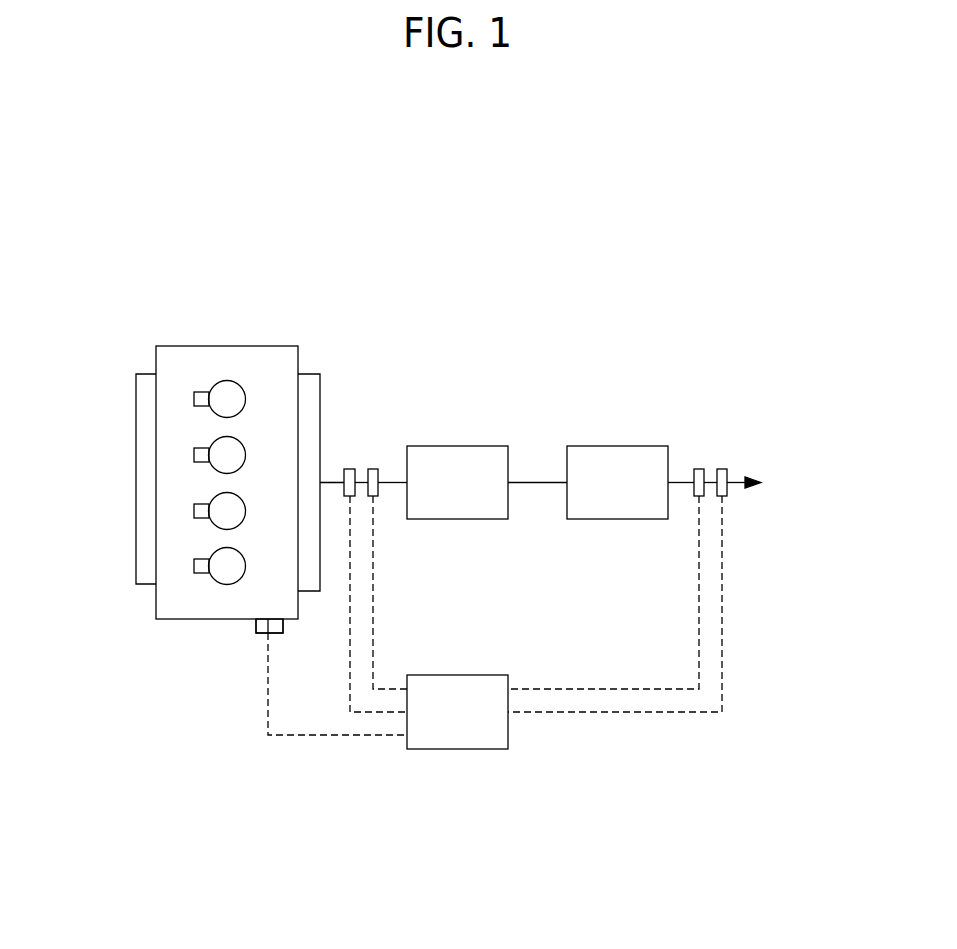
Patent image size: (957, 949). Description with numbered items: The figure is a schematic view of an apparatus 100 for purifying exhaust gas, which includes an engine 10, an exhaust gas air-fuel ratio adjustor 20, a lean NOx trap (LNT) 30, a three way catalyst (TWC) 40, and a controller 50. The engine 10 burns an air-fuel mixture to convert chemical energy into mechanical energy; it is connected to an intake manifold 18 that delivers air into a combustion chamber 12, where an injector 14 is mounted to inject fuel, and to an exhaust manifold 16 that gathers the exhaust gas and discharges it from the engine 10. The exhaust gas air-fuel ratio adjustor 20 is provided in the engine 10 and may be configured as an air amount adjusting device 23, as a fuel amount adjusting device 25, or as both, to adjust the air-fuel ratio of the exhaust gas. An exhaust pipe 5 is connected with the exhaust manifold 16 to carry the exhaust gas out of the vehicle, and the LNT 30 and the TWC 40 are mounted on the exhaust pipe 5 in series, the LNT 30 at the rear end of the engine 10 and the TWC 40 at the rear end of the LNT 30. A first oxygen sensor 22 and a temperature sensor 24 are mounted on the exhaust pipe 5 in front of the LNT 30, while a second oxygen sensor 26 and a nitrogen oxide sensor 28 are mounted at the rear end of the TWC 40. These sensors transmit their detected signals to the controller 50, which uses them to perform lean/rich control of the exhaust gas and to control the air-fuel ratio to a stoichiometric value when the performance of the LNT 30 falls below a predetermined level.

The apparatus for purifying exhaust gas 100 is at (476, 238).
The engine 10 is at (283, 302).
The combustion chamber 12 is at (222, 381).
The injector 14 is at (200, 391).
The exhaust manifold 16 is at (308, 374).
The intake manifold 18 is at (136, 431).
The exhaust gas air-fuel ratio adjustor 20 is at (262, 636).
The air amount adjusting device 23 is at (256, 630).
The fuel amount adjusting device 25 is at (283, 630).
The exhaust pipe 5 is at (332, 481).
The first oxygen sensor 22 is at (350, 469).
The temperature sensor 24 is at (372, 469).
The lean NOx trap (LNT) 30 is at (452, 446).
The three way catalyst (TWC) 40 is at (618, 446).
The second oxygen sensor 26 is at (698, 469).
The nitrogen oxide sensor 28 is at (722, 469).
The controller 50 is at (457, 749).